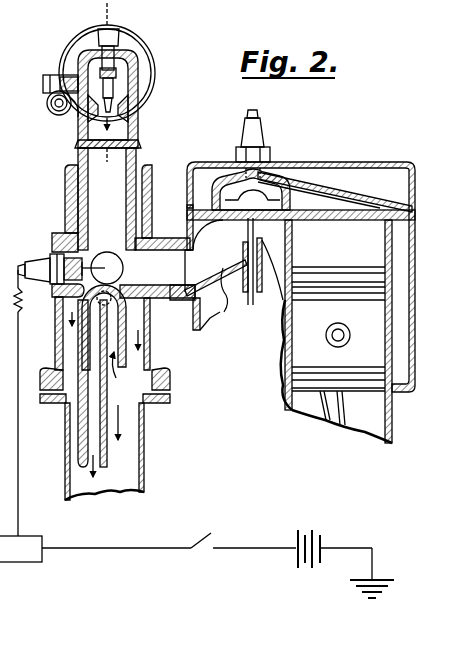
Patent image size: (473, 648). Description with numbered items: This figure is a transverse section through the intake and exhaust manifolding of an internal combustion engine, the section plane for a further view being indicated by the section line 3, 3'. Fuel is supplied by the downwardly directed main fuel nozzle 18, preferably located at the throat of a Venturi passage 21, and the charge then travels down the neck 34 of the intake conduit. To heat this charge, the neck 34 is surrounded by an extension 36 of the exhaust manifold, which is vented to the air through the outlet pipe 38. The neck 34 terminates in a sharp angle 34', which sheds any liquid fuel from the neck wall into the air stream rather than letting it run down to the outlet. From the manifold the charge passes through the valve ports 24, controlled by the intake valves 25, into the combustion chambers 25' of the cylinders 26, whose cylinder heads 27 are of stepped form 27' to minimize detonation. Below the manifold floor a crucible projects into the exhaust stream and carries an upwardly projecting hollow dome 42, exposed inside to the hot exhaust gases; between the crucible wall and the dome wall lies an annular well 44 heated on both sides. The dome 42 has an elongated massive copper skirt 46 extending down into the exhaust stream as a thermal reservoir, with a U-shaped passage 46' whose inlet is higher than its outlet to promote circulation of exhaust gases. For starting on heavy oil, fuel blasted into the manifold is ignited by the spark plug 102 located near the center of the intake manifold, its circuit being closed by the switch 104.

The section line 3- 3 is at (101, 14).
The section line 3'- 3' is at (106, 160).
The main fuel nozzle 18 is at (130, 110).
The Venturi passage 21 is at (96, 112).
The outlet pipe 38 is at (39, 98).
The neck 34 is at (126, 199).
The extension 36 is at (140, 218).
The spark plug 102 is at (35, 262).
The sharp angle 34' is at (115, 268).
The hollow dome 42 is at (88, 328).
The annular well 44 is at (127, 324).
The skirt 46 is at (76, 388).
The U-shaped passage 46' is at (62, 383).
The valve ports 24 is at (216, 304).
The intake valves 25 is at (234, 261).
The combustion chambers 25' is at (321, 195).
The cylinders 26 is at (385, 243).
The cylinder heads 27 is at (335, 192).
The stepped form 27' is at (264, 175).
The switch 104 is at (215, 542).